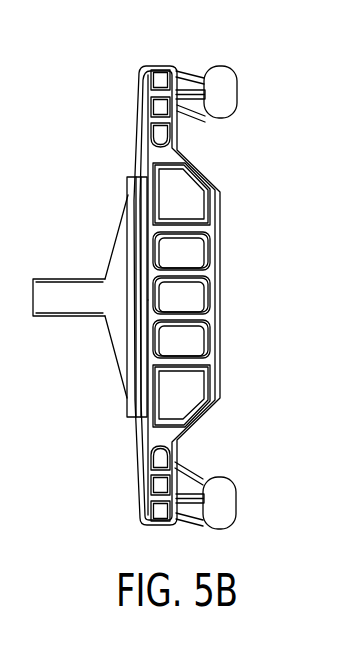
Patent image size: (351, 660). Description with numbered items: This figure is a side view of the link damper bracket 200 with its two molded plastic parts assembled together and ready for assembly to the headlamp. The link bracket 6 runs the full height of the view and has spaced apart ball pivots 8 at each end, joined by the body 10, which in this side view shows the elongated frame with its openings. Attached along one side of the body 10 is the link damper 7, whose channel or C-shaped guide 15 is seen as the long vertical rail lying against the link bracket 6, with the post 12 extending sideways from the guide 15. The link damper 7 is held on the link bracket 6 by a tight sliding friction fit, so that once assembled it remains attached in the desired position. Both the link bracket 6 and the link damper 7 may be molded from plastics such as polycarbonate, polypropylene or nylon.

The link damper bracket 200 is at (114, 112).
The link bracket 6 is at (199, 210).
The link damper 7 is at (133, 188).
The ball pivots 8 is at (226, 66).
The body 10 is at (221, 294).
The post 12 is at (53, 279).
The C-shaped guide 15 is at (127, 407).